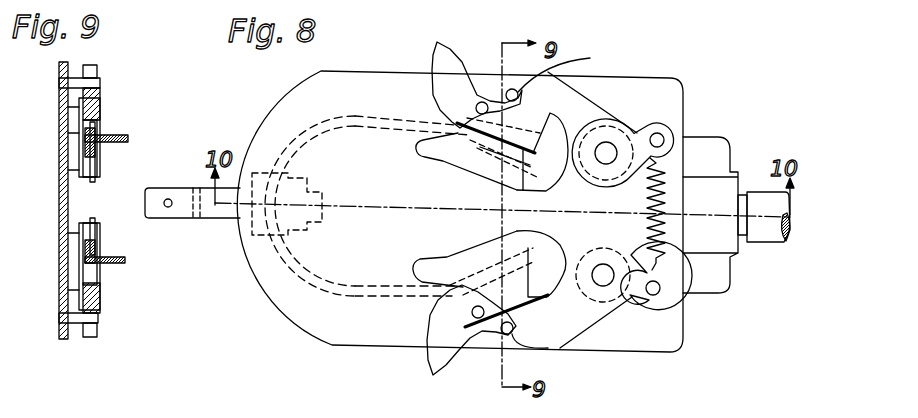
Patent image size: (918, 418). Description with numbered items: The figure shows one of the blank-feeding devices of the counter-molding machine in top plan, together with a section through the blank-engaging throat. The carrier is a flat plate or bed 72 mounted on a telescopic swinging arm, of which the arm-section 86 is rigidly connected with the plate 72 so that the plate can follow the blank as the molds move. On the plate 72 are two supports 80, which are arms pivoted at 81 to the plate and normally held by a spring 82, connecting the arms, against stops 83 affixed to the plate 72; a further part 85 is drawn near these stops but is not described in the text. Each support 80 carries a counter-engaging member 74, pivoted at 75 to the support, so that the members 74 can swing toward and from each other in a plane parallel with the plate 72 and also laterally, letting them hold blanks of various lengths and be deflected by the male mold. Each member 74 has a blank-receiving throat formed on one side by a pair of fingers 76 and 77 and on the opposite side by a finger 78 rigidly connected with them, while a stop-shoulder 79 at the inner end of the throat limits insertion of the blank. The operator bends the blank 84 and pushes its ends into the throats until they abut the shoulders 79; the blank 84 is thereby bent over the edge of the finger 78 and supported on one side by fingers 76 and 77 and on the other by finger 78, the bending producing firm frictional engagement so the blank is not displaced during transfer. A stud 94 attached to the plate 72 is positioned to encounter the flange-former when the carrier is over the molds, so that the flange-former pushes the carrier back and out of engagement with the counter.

In FIG. 9, the flat plate or bed 72 is at (60, 210).
In FIG. 8, the flat plate or bed 72 is at (277, 287).
In FIG. 8, the counter-engaging member 74 is at (533, 172).
In FIG. 8, the pivot 75 is at (484, 102).
In FIG. 9, the finger 76 is at (100, 115).
In FIG. 8, the finger 76 is at (457, 133).
In FIG. 9, the finger 77 is at (80, 137).
In FIG. 8, the finger 77 is at (458, 125).
In FIG. 9, the finger 78 is at (97, 163).
In FIG. 8, the finger 78 is at (475, 157).
In FIG. 8, the stop-shoulder 79 is at (555, 177).
In FIG. 9, the support 80 is at (100, 93).
In FIG. 8, the support 80 is at (593, 108).
In FIG. 8, the pivot 81 is at (607, 150).
In FIG. 8, the spring 82 is at (667, 198).
In FIG. 9, the stop 83 is at (98, 82).
In FIG. 8, the stop 83 is at (502, 334).
In FIG. 9, the blank 84 is at (125, 137).
In FIG. 8, the blank 84 is at (340, 130).
In FIG. 8, the spring arm 85 is at (567, 193).
In FIG. 8, the arm-section 86 is at (762, 232).
In FIG. 8, the stud 94 is at (218, 212).